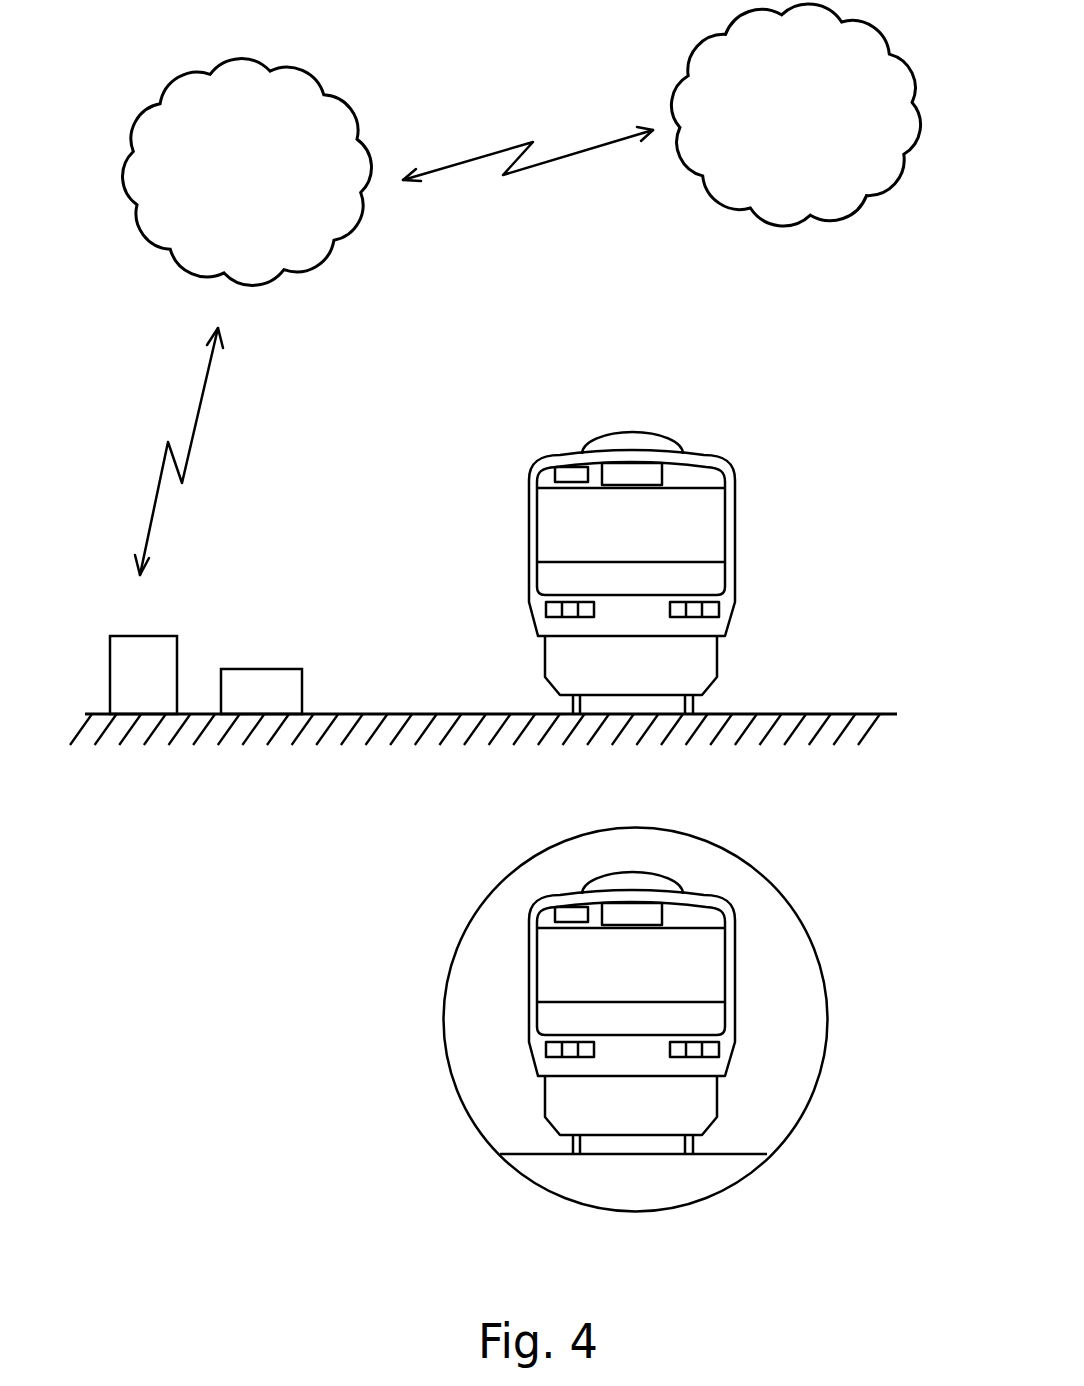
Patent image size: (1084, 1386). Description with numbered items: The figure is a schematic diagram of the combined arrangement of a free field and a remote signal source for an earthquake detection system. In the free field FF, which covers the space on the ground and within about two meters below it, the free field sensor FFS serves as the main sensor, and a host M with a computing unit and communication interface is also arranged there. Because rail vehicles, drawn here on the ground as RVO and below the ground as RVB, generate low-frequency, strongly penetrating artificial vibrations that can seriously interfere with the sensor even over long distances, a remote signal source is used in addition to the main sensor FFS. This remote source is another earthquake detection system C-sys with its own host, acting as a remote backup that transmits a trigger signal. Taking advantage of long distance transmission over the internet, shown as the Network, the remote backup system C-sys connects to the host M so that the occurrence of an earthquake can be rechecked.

The communication network Network is at (247, 172).
The remote backup earthquake detection system C-sys is at (795, 115).
The free field FF is at (462, 714).
The host M is at (157, 694).
The free field sensor FFS is at (270, 669).
The rail vehicle object RVO is at (743, 497).
The rail vehicle bounding view RVB is at (778, 889).